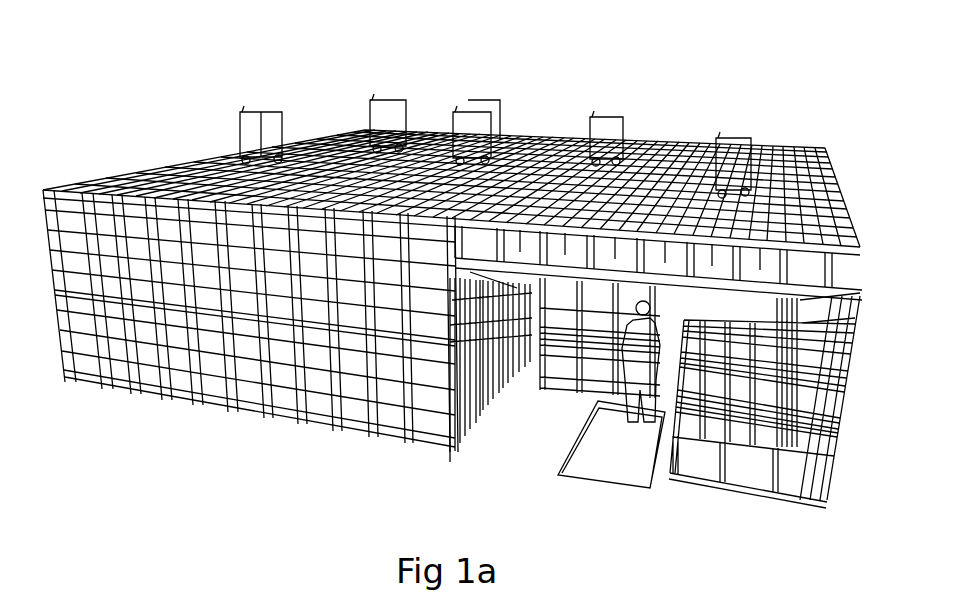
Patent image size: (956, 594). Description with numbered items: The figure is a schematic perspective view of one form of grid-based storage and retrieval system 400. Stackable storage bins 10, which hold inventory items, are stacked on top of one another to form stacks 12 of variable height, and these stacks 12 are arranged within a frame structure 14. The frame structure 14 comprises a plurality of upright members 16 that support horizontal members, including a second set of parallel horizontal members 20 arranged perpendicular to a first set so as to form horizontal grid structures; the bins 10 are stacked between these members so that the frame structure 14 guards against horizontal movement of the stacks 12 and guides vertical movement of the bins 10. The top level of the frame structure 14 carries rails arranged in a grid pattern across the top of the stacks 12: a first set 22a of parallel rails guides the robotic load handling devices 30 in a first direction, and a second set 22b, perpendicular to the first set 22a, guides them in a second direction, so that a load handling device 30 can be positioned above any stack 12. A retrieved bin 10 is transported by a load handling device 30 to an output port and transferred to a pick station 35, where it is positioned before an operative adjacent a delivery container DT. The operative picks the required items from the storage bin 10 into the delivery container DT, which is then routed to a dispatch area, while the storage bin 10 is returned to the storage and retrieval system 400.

The storage bin 10 is at (90, 372).
The stack 12 is at (215, 388).
The frame structure 14 is at (177, 167).
The upright member 16 is at (160, 343).
The second set of parallel horizontal members 20 is at (850, 248).
The first set of parallel rails 22a is at (793, 188).
The second set of parallel rails 22b is at (830, 227).
The robotic load handling device 30 is at (748, 158).
The pick station 35 is at (792, 428).
The storage and retrieval system 400 is at (678, 153).
The delivery container DT is at (710, 352).